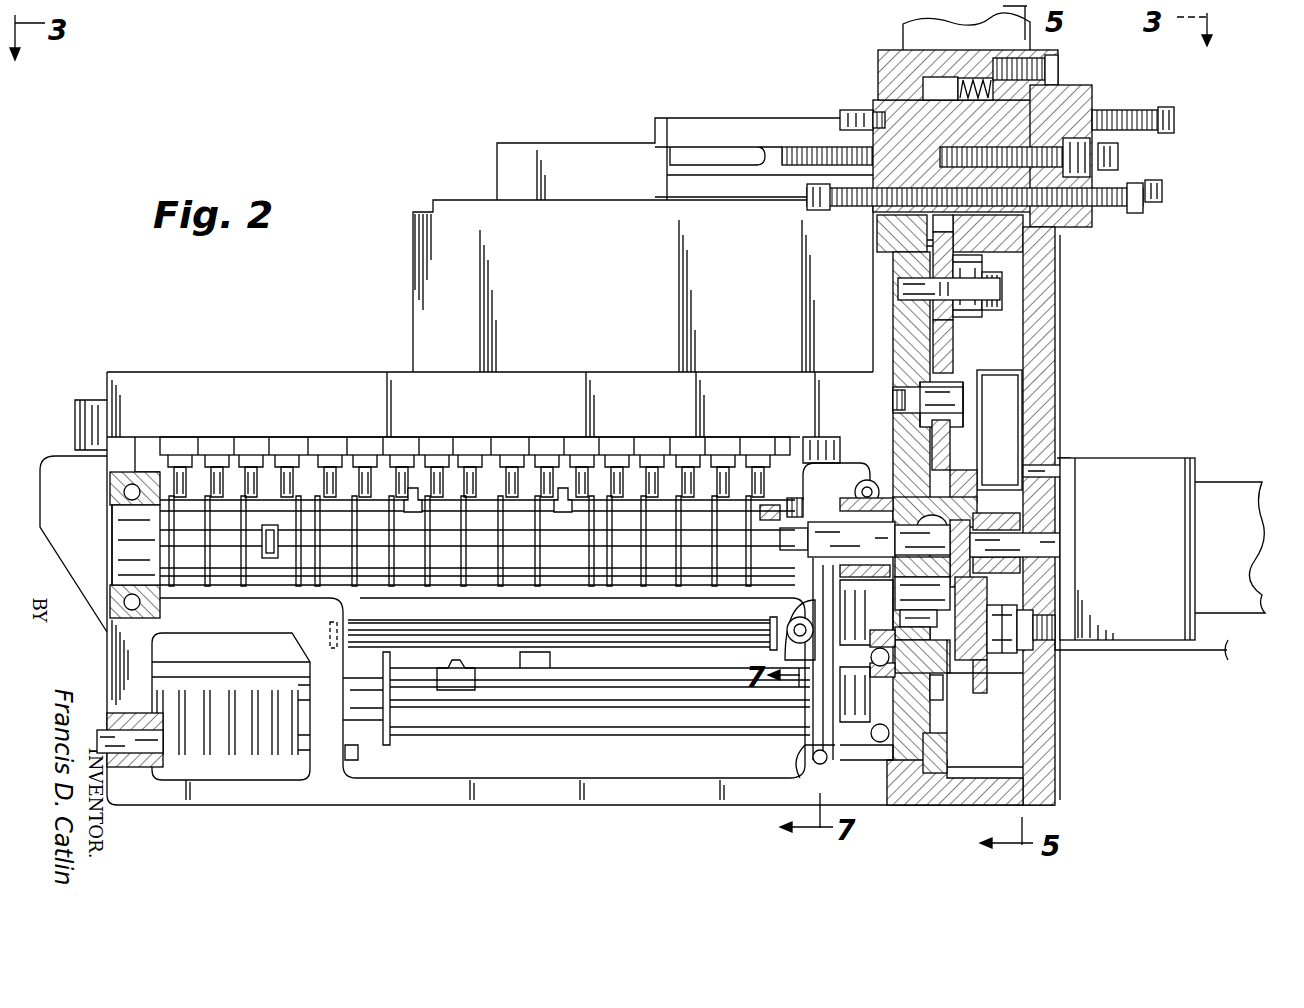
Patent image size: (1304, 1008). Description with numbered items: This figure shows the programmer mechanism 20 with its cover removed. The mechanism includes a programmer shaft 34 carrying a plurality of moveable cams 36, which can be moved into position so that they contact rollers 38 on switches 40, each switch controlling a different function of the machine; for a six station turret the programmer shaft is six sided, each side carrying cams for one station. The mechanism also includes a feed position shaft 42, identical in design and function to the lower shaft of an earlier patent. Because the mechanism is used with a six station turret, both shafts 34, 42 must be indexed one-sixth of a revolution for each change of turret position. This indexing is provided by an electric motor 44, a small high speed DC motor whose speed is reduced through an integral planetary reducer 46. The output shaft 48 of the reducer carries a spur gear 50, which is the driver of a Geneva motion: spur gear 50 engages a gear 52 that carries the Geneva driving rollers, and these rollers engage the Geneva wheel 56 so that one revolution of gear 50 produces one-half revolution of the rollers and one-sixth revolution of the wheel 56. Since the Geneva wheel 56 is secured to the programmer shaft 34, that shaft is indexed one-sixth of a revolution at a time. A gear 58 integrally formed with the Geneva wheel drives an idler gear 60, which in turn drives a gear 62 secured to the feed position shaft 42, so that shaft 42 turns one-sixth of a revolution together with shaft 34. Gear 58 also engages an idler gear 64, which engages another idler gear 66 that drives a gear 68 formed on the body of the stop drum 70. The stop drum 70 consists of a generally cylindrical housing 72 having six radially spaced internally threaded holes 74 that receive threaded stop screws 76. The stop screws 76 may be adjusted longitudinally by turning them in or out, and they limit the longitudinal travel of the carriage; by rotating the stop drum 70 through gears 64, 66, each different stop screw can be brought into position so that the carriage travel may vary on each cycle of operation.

The programmer mechanism 20 is at (1085, 317).
The programmer shaft 34 is at (884, 544).
The moveable cams 36 is at (273, 555).
The rollers 38 is at (178, 498).
The switches 40 is at (188, 447).
The feed position shaft 42 is at (542, 717).
The electric motor 44 is at (1227, 487).
The integral planetary reducer 46 is at (1130, 470).
The output shaft 48 is at (1050, 544).
The spur gear 50 is at (980, 518).
The gear 52 is at (982, 688).
The Geneva wheel 56 is at (988, 483).
The gear 58 is at (928, 477).
The idler gear 60 is at (940, 599).
The gear 62 is at (943, 748).
The idler gear 64 is at (948, 352).
The idler gear 66 is at (933, 262).
The gear 68 is at (955, 228).
The stop drum 70 is at (1107, 98).
The cylindrical housing 72 is at (1075, 90).
The internally threaded holes 74 is at (900, 196).
The stop screws 76 is at (1140, 132).